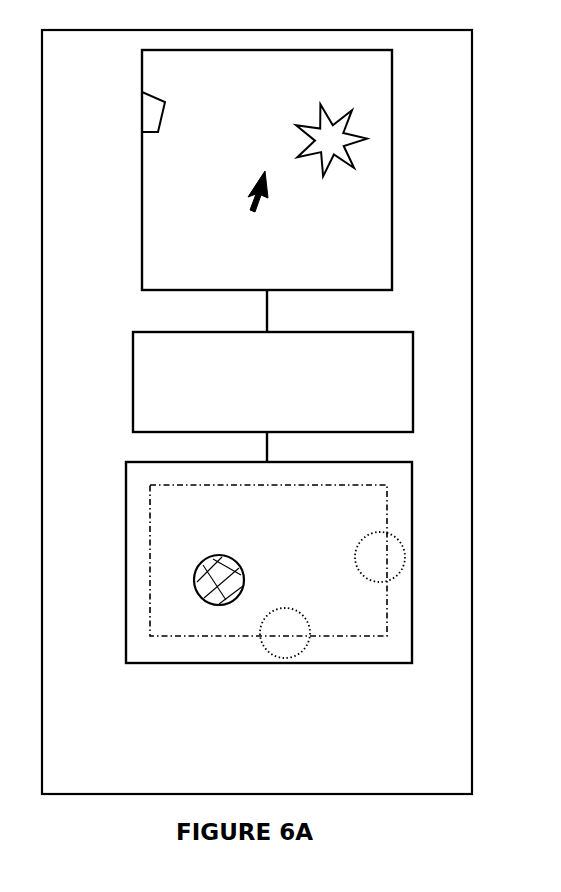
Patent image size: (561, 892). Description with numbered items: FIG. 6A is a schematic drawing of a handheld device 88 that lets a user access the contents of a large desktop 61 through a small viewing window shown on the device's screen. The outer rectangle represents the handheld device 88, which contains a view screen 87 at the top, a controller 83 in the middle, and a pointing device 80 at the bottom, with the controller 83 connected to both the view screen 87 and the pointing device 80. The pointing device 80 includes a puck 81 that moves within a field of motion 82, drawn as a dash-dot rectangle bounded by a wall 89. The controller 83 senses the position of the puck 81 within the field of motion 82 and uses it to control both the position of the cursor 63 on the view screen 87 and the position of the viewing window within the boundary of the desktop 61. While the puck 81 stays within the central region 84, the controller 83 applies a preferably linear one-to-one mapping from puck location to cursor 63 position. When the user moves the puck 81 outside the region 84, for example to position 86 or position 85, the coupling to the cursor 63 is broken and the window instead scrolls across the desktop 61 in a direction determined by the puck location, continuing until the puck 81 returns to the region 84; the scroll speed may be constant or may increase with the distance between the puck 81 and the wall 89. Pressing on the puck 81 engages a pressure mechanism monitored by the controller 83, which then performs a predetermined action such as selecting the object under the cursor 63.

The desktop 61 is at (560, 233).
The cursor 63 is at (252, 187).
The pointing device 80 is at (150, 663).
The puck 81 is at (222, 575).
The field of motion 82 is at (373, 650).
The controller 83 is at (273, 382).
The region 84 is at (167, 582).
The position 85 is at (285, 608).
The position 86 is at (355, 562).
The view screen 87 is at (142, 207).
The handheld device 88 is at (473, 737).
The wall 89 is at (411, 604).